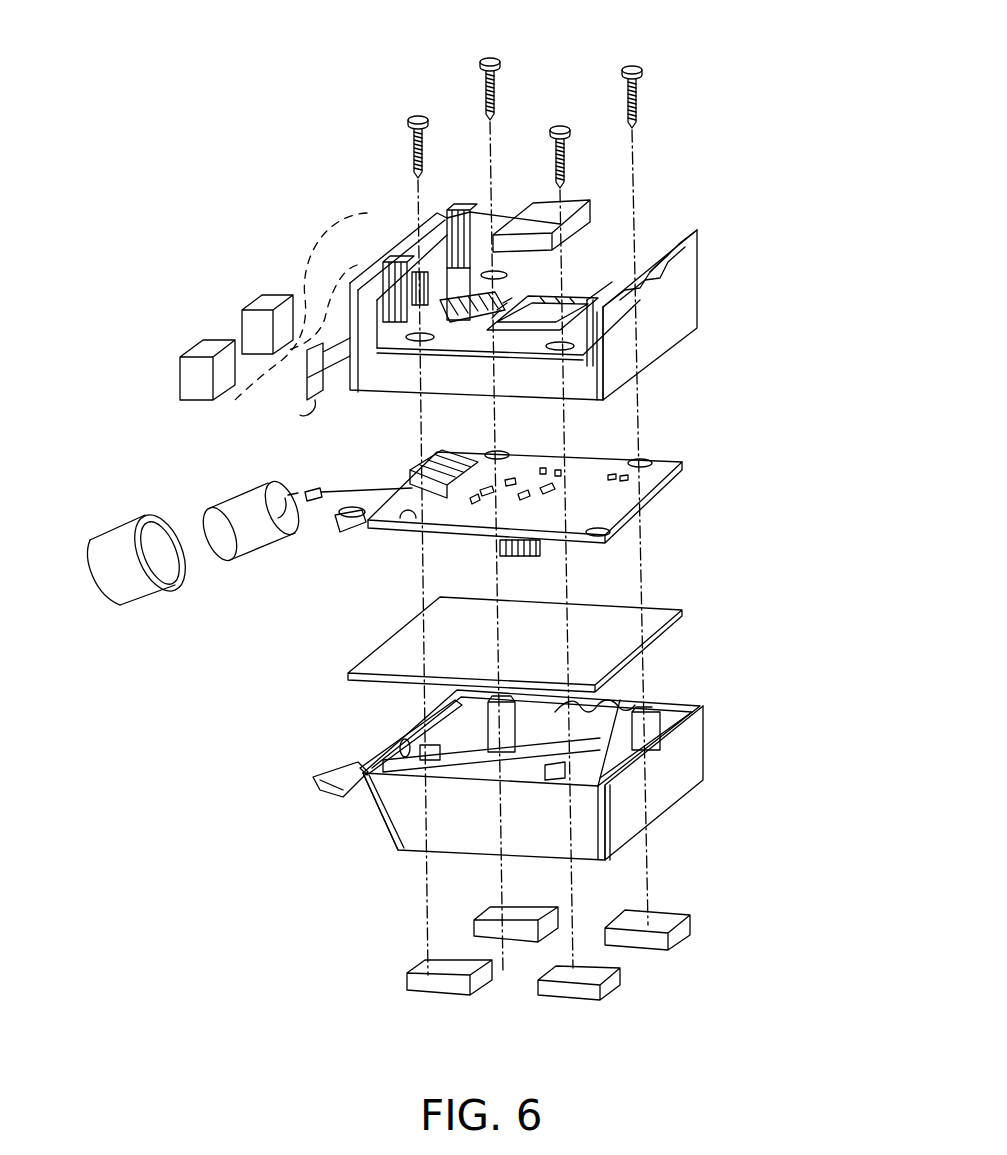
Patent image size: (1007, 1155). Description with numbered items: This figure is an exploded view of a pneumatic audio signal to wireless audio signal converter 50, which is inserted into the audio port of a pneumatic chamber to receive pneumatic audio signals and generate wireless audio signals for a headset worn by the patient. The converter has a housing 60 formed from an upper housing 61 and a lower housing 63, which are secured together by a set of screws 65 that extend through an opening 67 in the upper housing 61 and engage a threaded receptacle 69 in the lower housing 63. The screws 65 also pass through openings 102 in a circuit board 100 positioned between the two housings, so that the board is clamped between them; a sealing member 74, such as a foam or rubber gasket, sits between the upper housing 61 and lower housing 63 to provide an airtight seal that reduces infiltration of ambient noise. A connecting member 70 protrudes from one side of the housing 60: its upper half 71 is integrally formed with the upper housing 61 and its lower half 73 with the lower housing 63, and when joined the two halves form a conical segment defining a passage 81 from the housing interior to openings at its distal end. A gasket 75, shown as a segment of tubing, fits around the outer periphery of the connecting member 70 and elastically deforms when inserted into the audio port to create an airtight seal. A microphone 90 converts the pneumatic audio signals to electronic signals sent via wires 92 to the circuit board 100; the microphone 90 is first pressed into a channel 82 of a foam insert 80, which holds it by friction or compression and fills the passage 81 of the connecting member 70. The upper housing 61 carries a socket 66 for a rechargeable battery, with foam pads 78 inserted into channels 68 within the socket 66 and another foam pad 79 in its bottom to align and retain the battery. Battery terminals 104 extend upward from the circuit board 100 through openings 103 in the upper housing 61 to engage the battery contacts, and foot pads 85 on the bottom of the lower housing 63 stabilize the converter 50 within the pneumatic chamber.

The pneumatic audio signal to wireless audio signal converter 50 is at (682, 98).
The housing 60 is at (700, 238).
The upper housing 61 is at (688, 290).
The lower housing 63 is at (693, 735).
The screws 65 is at (482, 62).
The socket 66 is at (660, 240).
The opening 67 is at (507, 272).
The channels 68 is at (458, 212).
The threaded receptacle 69 is at (672, 708).
The connecting member 70 is at (352, 805).
The upper half 71 is at (318, 402).
The lower half 73 is at (330, 785).
The sealing member 74 is at (655, 627).
The gasket 75 is at (128, 578).
The foam pads 78 is at (258, 302).
The foam pad 79 is at (600, 205).
The foam insert 80 is at (235, 520).
The passage 81 is at (403, 752).
The channel 82 is at (290, 500).
The foot pads 85 is at (480, 915).
The microphone 90 is at (310, 492).
The wires 92 is at (392, 496).
The circuit board 100 is at (645, 430).
The openings 102 is at (495, 450).
The openings 103 is at (493, 268).
The battery terminals 104 is at (420, 465).